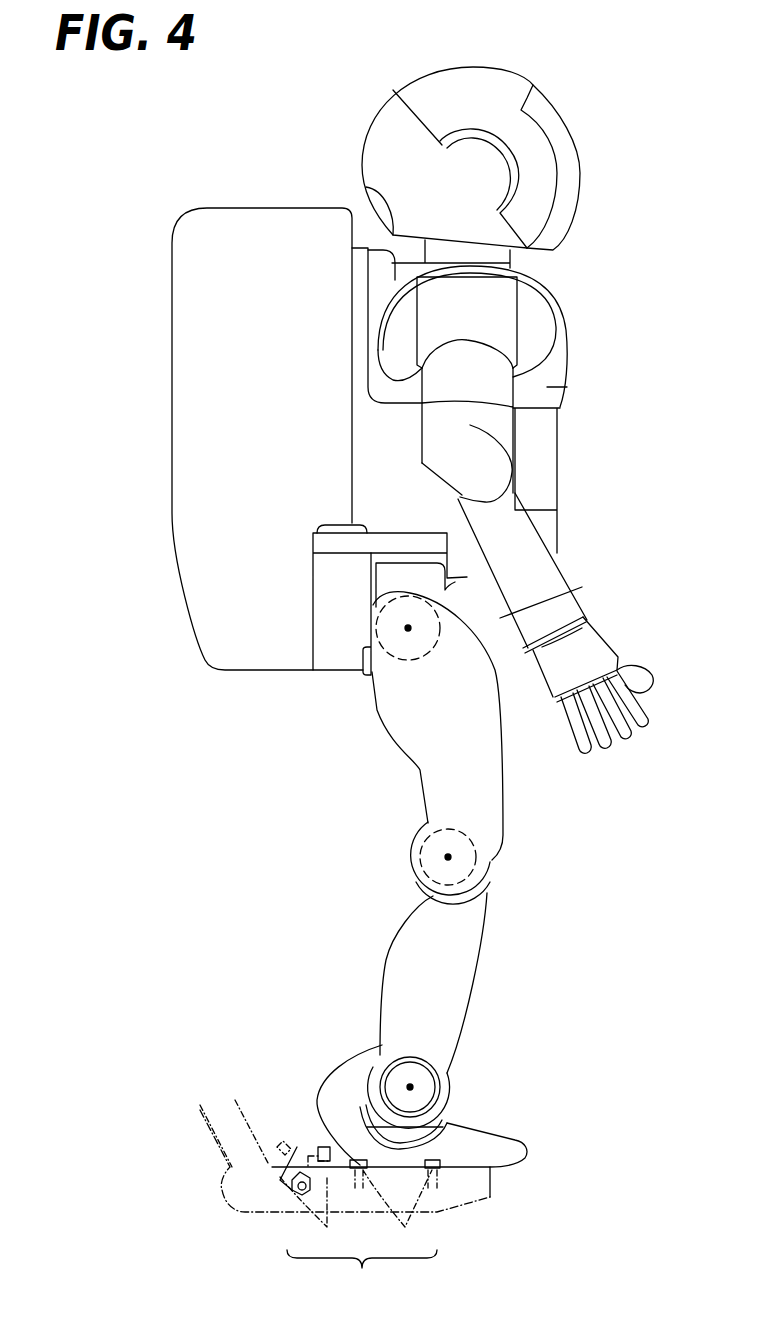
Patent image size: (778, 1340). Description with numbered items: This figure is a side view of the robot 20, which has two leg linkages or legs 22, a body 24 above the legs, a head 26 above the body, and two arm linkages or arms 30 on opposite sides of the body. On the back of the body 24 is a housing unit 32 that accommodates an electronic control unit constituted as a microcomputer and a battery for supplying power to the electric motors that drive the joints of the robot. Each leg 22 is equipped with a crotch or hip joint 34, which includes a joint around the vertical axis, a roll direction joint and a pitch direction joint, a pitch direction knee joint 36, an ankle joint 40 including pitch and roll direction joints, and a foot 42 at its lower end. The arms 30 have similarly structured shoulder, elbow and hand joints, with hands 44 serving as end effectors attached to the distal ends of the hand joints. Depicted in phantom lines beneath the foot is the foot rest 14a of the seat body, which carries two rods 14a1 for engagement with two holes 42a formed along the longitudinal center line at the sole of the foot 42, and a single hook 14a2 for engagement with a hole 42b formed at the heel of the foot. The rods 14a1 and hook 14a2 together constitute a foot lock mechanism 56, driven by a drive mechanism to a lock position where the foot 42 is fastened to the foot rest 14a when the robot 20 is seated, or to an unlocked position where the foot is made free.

The head 26 is at (437, 92).
The housing unit 32 is at (257, 230).
The robot 20 is at (562, 295).
The body 24 is at (540, 435).
The arm linkage 30 is at (570, 557).
The hand 44 is at (593, 653).
The crotch joint 34 is at (408, 628).
The leg linkage 22 is at (512, 858).
The knee joint 36 is at (448, 857).
The ankle joint 40 is at (410, 1087).
The foot 42 is at (485, 1133).
The hole 42a is at (325, 1145).
The hole 42b is at (322, 1145).
The foot rest 14a is at (490, 1197).
The rod 14a1 is at (396, 1213).
The hook 14a2 is at (311, 1216).
The foot lock mechanism 56 is at (362, 1278).